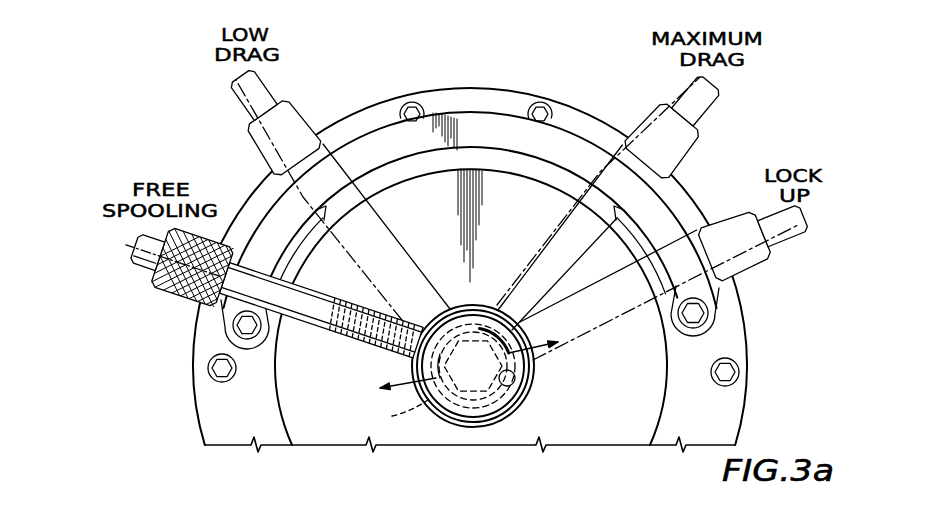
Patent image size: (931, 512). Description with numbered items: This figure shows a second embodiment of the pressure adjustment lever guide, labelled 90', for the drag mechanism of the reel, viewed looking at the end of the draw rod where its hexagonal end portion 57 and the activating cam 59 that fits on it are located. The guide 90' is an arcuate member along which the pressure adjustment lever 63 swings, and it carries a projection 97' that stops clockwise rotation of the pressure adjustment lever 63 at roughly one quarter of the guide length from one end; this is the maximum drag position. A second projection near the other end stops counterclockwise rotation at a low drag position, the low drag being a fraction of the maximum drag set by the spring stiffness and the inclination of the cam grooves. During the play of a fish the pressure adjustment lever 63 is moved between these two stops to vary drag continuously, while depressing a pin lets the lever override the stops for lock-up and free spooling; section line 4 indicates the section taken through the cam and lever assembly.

The drag pressure adjustment lever 63 is at (290, 97).
The pressure adjustment lever guide 90' is at (470, 251).
The projection 97' is at (590, 248).
The hexagonal end portion 57 is at (486, 369).
The activating cam 59 is at (392, 416).
The section line 4- 4 is at (458, 359).